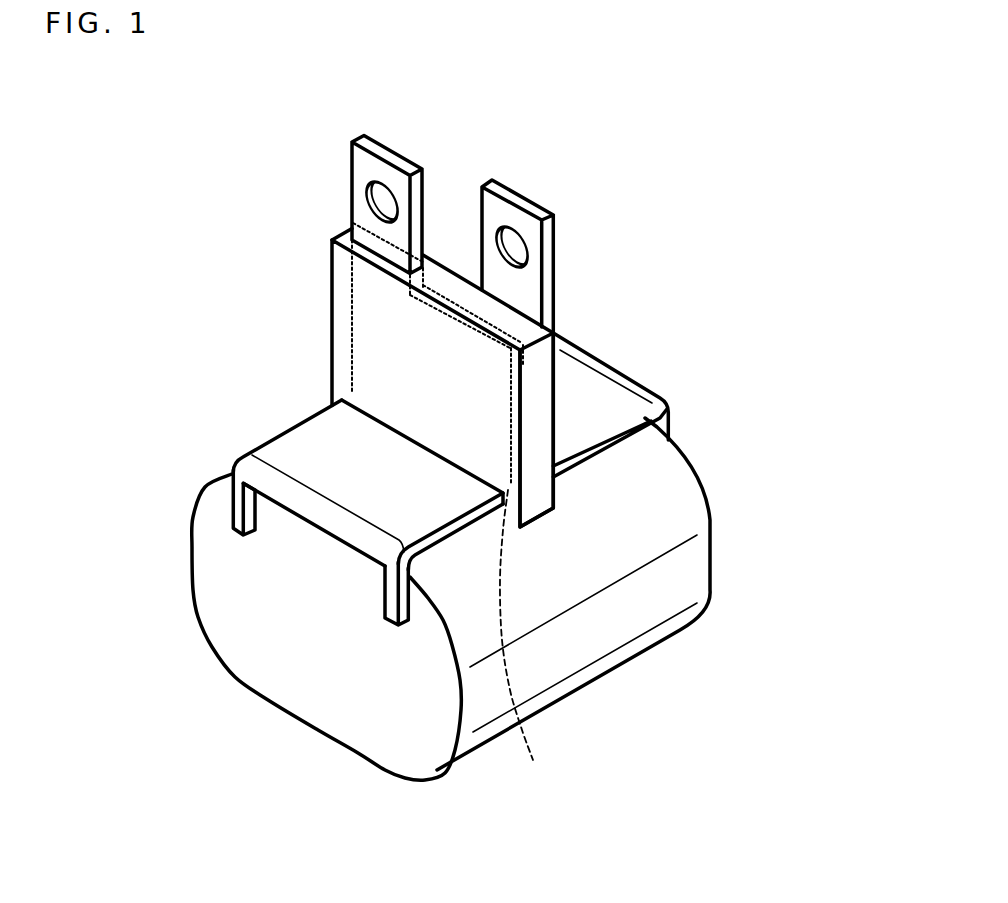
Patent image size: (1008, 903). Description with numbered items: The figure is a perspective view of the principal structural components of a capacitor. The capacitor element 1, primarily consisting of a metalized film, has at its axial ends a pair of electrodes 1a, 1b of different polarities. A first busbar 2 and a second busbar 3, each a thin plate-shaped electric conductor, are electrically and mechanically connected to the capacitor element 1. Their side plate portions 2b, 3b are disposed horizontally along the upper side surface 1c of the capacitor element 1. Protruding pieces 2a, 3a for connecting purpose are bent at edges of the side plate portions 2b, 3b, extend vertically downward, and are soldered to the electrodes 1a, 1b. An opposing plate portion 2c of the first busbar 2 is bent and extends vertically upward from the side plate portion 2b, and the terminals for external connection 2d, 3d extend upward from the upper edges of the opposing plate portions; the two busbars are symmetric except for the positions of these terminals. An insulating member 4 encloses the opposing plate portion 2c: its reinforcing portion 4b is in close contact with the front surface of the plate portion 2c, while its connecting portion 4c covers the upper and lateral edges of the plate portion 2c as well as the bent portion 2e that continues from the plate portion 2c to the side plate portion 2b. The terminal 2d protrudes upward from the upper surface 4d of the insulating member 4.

The capacitor element 1 is at (483, 564).
The electrode 1a is at (285, 655).
The electrode 1b is at (695, 476).
The upper side surface 1c is at (600, 460).
The first busbar 2 is at (320, 438).
The protruding pieces for connecting purpose 2a is at (237, 508).
The side plate portion 2b is at (316, 446).
The opposing plate portion 2c is at (352, 298).
The terminal for external connection 2d is at (388, 157).
The bent portion 2e is at (524, 641).
The second busbar 3 is at (621, 306).
The protruding pieces for connecting purpose 3a is at (667, 430).
The side plate portion 3b is at (573, 383).
The terminal for external connection 3d is at (512, 200).
The insulating member 4 is at (495, 347).
The reinforcing portion 4b is at (383, 343).
The connecting portion 4c is at (540, 483).
The upper surface 4d is at (442, 277).